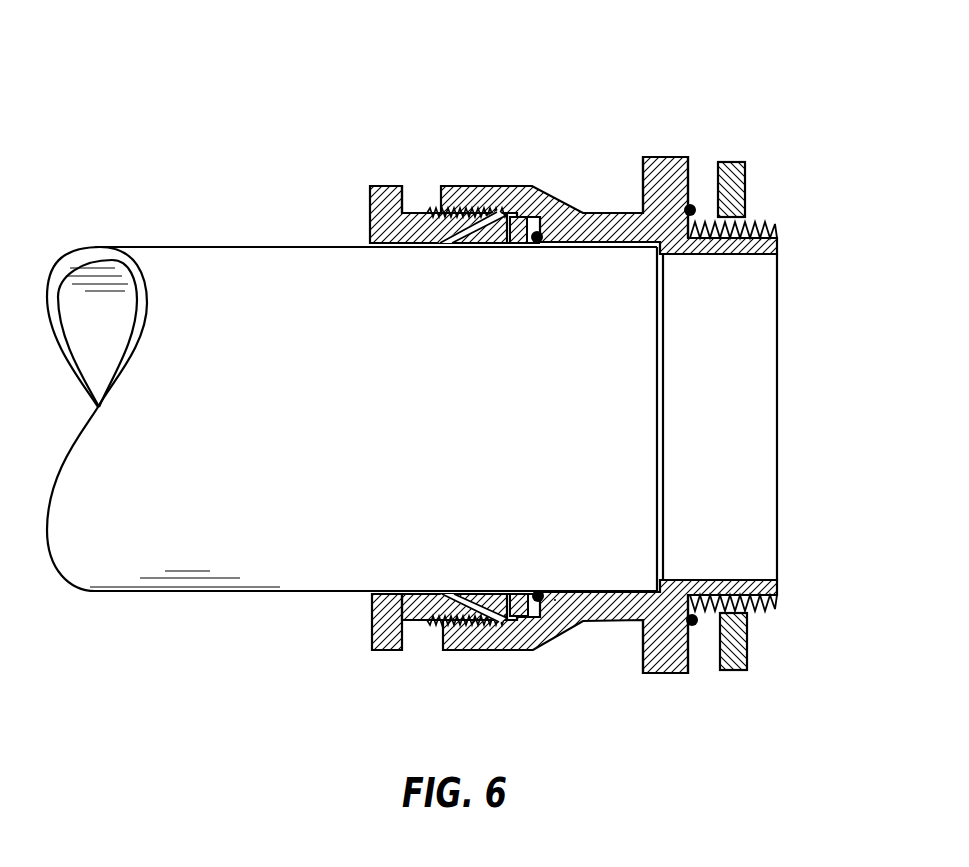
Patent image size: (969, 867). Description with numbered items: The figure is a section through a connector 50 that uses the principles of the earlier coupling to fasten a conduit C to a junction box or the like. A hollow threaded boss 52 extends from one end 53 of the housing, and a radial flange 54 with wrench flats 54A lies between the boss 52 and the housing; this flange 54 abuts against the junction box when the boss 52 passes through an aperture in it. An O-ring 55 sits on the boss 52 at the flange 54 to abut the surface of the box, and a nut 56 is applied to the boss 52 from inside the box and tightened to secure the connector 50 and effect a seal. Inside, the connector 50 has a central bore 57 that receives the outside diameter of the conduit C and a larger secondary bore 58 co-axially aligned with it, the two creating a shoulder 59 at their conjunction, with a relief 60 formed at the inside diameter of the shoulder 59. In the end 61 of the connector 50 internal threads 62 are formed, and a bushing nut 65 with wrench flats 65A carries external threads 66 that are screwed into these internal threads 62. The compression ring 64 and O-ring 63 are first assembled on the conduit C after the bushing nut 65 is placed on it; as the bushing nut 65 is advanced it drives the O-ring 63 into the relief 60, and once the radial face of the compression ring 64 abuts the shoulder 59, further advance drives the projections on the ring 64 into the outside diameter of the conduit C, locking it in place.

The connector 50 is at (233, 72).
The hollow threaded boss 52 is at (778, 240).
The end of the housing 53 is at (734, 268).
The radial flange 54 is at (692, 165).
The wrench flats 54A is at (666, 676).
The O-ring 55 is at (704, 645).
The nut 56 is at (745, 196).
The central bore 57 is at (617, 243).
The secondary bore 58 is at (531, 618).
The shoulder 59 is at (540, 232).
The relief 60 is at (530, 242).
The end of the connector 61 is at (443, 648).
The internal threads 62 is at (492, 213).
The O-ring 63 is at (538, 594).
The compression ring 64 is at (498, 592).
The bushing nut 65 is at (356, 214).
The wrench flats 65A is at (377, 188).
The external threads 66 is at (428, 210).
The conduit C is at (388, 438).